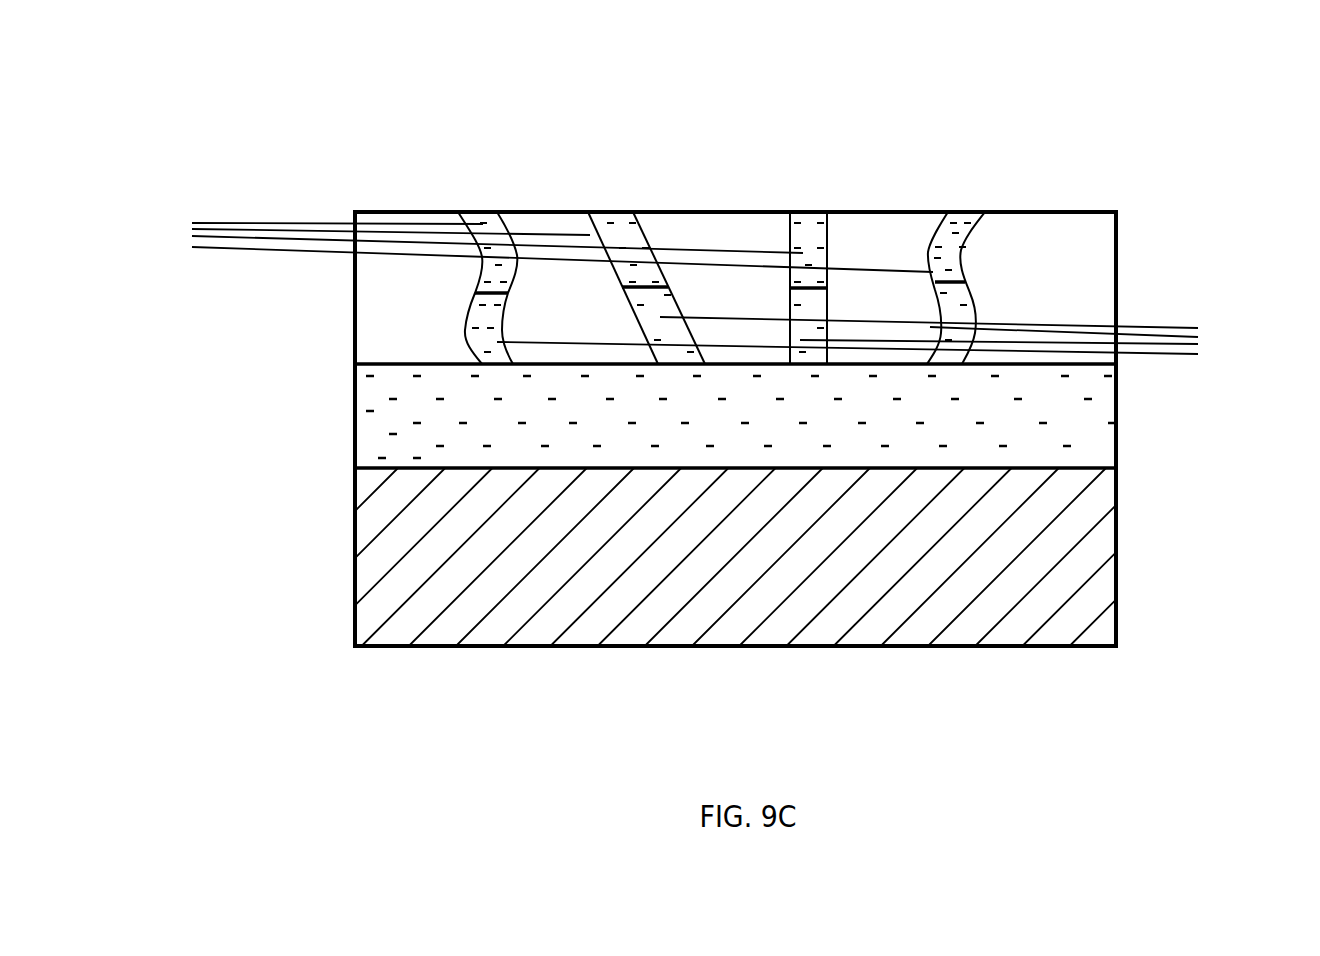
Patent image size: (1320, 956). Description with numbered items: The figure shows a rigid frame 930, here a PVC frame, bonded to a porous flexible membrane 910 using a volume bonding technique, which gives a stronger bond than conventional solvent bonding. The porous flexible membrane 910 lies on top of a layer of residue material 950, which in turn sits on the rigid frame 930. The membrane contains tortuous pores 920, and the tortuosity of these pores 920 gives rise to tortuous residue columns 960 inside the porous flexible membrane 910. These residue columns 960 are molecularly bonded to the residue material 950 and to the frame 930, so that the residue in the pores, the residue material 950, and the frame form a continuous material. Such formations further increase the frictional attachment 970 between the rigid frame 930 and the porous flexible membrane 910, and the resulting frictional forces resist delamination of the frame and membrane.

The porous flexible membrane 910 is at (1100, 212).
The pores 920 is at (962, 212).
The rigid frame 930 is at (1118, 565).
The residue material 950 is at (370, 423).
The tortuous residue columns 960 is at (527, 247).
The frictional attachment 970 is at (880, 335).